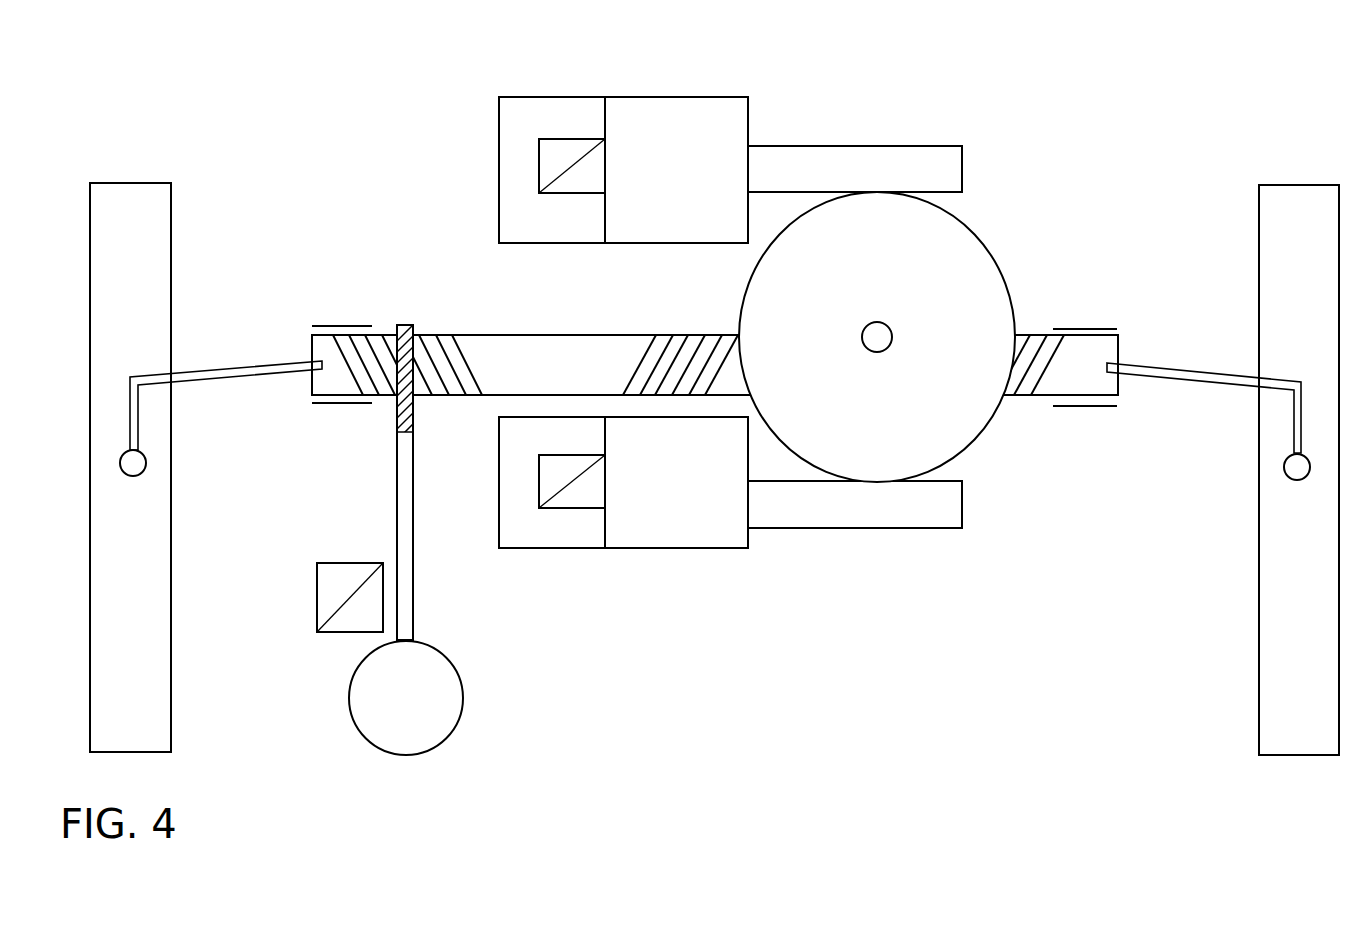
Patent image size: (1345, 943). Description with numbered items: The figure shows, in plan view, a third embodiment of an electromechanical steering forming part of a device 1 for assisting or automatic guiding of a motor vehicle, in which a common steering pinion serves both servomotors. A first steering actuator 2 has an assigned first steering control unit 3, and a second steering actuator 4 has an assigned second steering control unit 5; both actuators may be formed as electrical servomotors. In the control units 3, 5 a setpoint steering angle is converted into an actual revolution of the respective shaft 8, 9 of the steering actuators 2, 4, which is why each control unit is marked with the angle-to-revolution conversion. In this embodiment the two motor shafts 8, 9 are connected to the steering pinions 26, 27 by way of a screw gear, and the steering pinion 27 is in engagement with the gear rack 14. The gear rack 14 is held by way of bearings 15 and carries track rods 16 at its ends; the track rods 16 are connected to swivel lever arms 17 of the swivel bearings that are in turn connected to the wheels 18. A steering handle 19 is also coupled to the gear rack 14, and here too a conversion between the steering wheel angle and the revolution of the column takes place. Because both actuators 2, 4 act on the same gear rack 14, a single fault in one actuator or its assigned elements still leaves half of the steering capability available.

The device 1 is at (714, 392).
The first steering actuator 2 is at (680, 117).
The first steering control unit 3 is at (559, 117).
The second steering actuator 4 is at (677, 535).
The second steering control unit 5 is at (546, 535).
The shaft 8 is at (784, 166).
The shaft 9 is at (791, 514).
The gear rack 14 is at (487, 352).
The bearings 15 is at (346, 325).
The track rods 16 is at (251, 366).
The swivel lever arms 17 is at (137, 423).
The wheels 18 is at (142, 537).
The steering handle 19 is at (443, 718).
The steering pinion 26 is at (958, 432).
The steering pinion 27 is at (883, 337).